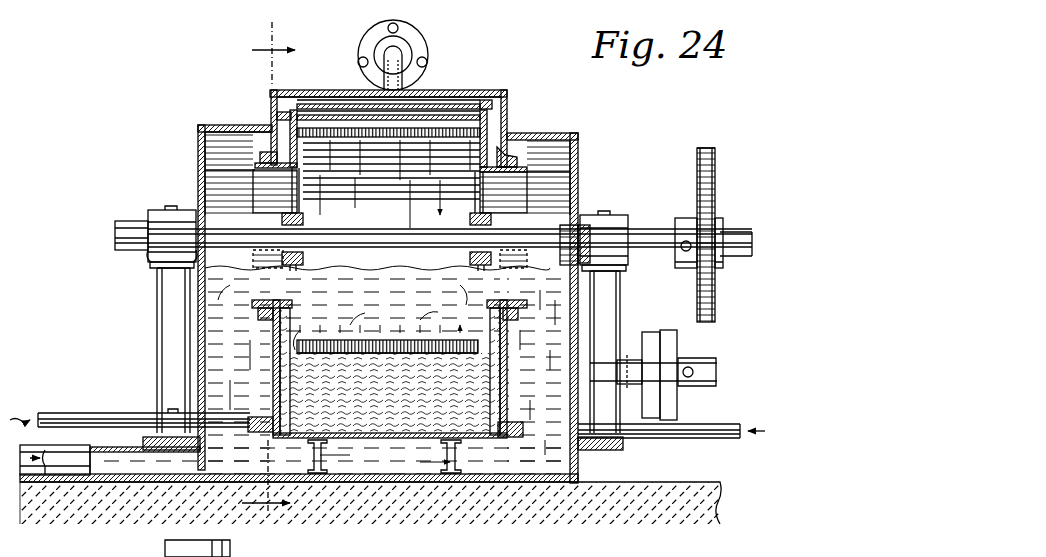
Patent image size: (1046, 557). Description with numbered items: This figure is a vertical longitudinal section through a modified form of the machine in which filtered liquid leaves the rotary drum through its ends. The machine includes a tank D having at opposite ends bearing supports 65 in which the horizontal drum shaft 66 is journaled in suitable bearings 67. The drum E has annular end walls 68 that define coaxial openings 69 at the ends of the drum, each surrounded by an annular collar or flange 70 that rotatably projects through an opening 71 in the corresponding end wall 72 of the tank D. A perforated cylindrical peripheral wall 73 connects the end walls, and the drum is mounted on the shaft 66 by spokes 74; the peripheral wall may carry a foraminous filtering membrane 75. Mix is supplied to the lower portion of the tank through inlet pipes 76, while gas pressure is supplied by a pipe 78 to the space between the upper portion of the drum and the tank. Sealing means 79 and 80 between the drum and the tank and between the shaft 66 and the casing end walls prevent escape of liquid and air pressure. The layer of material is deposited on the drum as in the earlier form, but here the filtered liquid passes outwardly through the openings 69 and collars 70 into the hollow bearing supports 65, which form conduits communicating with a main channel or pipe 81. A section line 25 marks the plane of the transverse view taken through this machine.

The section line 25 is at (276, 282).
The bearing supports 65 is at (198, 133).
The horizontal drum shaft 66 is at (648, 242).
The bearings 67 is at (195, 207).
The annular end walls 68 is at (277, 125).
The coaxial openings 69 is at (300, 180).
The annular collar 70 is at (203, 200).
The opening 71 is at (505, 134).
The end wall 72 is at (262, 362).
The perforated cylindrical peripheral wall 73 is at (340, 123).
The spokes 74 is at (577, 190).
The foraminous filtering membrane 75 is at (395, 360).
The inlet pipes 76 is at (110, 400).
The pipe 78 is at (402, 53).
The sealing means 79 is at (255, 142).
The sealing means 80 is at (203, 280).
The main channel or pipe 81 is at (510, 477).
The tank D is at (493, 90).
The drum E is at (493, 137).